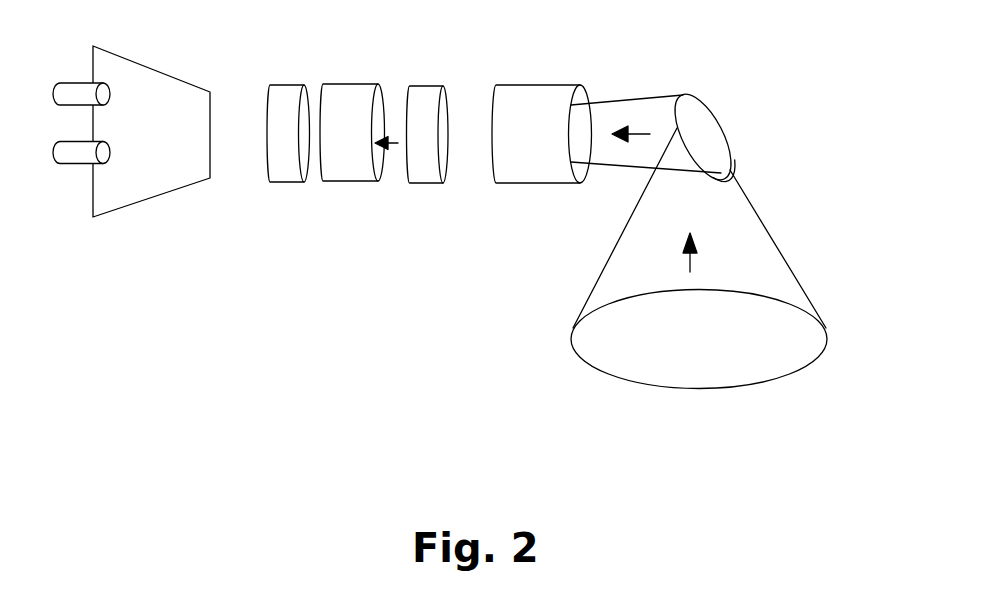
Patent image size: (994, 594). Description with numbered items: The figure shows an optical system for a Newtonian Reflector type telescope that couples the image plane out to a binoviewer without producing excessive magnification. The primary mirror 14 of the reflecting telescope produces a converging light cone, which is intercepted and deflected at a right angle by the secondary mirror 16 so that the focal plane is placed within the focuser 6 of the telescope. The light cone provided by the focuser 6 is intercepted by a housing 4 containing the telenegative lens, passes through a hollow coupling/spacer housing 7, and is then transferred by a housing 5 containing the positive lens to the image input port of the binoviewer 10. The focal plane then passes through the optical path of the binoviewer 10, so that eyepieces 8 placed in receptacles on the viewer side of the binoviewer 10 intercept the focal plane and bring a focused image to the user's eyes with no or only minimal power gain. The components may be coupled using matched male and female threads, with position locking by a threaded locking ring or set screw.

The housing 4 is at (423, 182).
The housing 5 is at (287, 181).
The focuser 6 is at (542, 182).
The hollow coupling/spacer housing 7 is at (358, 181).
The eyepieces 8 is at (72, 167).
The binoviewer 10 is at (157, 198).
The primary mirror 14 is at (802, 368).
The secondary mirror 16 is at (732, 160).